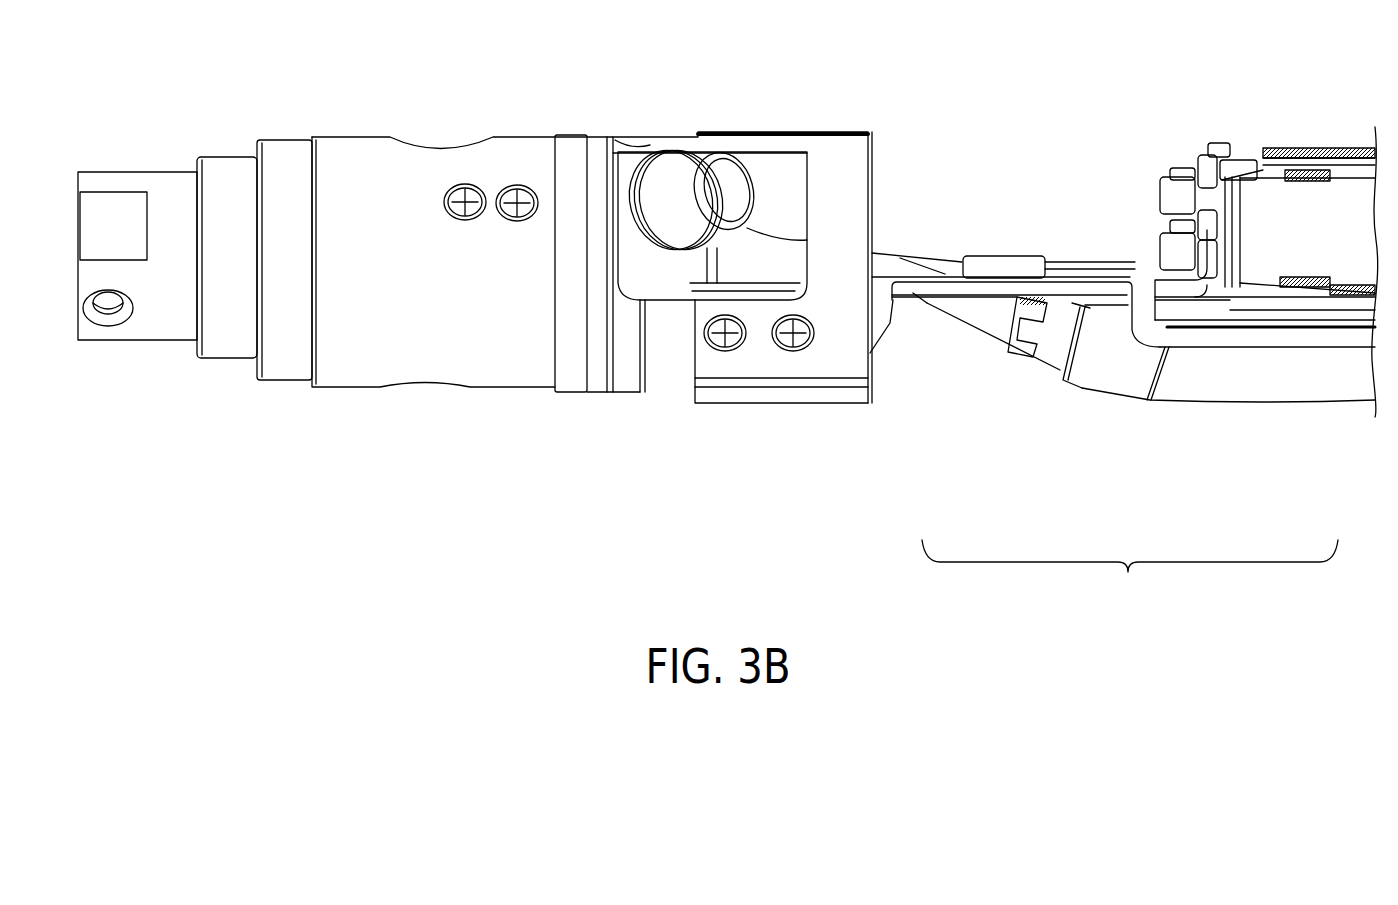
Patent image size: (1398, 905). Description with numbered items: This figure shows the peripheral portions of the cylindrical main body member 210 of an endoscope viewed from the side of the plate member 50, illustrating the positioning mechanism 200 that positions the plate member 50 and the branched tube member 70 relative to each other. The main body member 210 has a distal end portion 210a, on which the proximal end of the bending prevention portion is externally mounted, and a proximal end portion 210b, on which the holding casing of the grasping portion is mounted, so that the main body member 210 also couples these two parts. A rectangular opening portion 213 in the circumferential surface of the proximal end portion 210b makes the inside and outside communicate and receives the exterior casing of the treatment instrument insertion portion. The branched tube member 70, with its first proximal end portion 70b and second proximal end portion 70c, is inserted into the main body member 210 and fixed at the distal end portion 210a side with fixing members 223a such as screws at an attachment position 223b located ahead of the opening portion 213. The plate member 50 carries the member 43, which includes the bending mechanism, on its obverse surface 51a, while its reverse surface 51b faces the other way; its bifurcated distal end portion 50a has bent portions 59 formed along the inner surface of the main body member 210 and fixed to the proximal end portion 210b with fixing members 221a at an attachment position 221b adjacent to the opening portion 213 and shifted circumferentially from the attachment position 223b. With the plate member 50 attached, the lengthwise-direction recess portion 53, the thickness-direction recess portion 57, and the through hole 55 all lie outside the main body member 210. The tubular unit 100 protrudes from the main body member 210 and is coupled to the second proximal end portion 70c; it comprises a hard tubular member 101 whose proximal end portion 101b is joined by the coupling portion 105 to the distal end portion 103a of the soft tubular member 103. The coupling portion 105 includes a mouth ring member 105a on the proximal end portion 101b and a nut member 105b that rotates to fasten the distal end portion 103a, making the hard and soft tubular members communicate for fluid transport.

The member 43 is at (1310, 185).
The plate member 50 is at (1142, 241).
The distal end portion 50a is at (945, 265).
The obverse surface 51a is at (887, 277).
The reverse surface 51b is at (910, 295).
The lengthwise-direction recess portion 53 is at (913, 323).
The through hole 55 is at (1098, 256).
The thickness-direction recess portion 57 is at (1003, 270).
The bent portions 59 is at (893, 313).
The branched tube member 70 is at (623, 185).
The first proximal end portion 70b is at (676, 150).
The second proximal end portion 70c is at (718, 150).
The tubular unit 100 is at (1130, 574).
The hard tubular member 101 is at (948, 341).
The proximal end portion 101b is at (997, 333).
The soft tubular member 103 is at (1300, 395).
The distal end portion 103a is at (1172, 377).
The coupling portion 105 is at (1112, 382).
The mouth ring member 105a is at (1052, 350).
The nut member 105b is at (1082, 373).
The positioning mechanism 200 is at (382, 370).
The main body member 210 is at (430, 365).
The distal end portion 210a is at (160, 322).
The proximal end portion 210b is at (832, 403).
The opening portion 213 is at (775, 145).
The fixing members 221a is at (800, 352).
The attachment position 221b is at (706, 393).
The fixing members 223a is at (508, 220).
The attachment position 223b is at (549, 247).